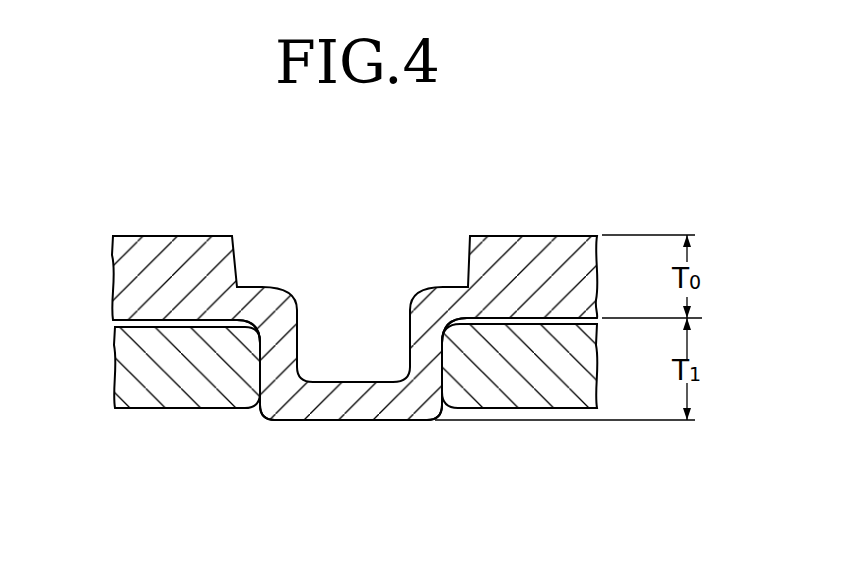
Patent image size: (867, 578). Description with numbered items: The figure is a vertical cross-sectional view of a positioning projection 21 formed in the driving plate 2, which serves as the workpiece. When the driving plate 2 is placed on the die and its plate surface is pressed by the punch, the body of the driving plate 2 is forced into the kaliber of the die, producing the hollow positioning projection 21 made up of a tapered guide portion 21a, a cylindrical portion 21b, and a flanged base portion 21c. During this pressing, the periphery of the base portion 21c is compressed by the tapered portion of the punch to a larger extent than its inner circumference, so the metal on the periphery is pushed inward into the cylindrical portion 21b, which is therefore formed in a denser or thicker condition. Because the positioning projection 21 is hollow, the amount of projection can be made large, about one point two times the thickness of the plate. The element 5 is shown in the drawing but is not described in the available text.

The driving plate 2 is at (163, 253).
The lower die plate 5 is at (132, 353).
The positioning projection 21 is at (420, 393).
The tapered guide portion 21a is at (266, 410).
The cylindrical portion 21b is at (258, 374).
The flanged base portion 21c is at (261, 299).